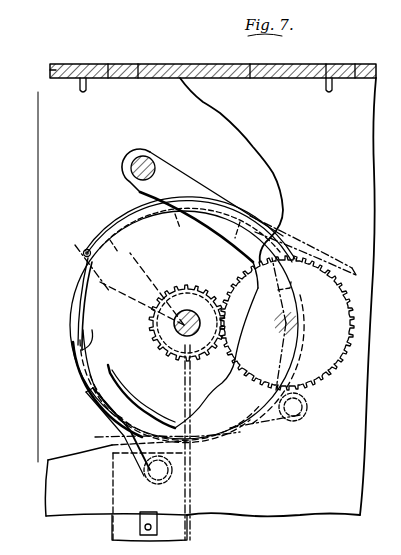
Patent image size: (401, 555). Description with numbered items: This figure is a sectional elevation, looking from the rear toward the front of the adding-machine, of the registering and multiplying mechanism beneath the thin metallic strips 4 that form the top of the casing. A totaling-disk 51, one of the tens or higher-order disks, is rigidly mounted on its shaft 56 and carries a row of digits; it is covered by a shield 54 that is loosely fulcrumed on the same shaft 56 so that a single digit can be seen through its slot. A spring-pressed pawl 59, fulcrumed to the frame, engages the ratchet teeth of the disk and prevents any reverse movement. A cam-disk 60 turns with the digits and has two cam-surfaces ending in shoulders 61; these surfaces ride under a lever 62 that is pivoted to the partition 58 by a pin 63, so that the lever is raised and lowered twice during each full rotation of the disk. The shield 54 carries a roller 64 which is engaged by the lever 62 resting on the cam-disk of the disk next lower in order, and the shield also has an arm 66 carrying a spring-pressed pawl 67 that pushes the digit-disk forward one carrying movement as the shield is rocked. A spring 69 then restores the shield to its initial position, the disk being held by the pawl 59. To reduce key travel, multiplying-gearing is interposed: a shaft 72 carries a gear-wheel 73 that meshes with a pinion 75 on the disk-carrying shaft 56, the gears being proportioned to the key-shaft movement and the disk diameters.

The metallic strips 4 is at (118, 68).
The totaling-disk 51 is at (76, 272).
The shield 54 is at (108, 236).
The shaft 56 is at (172, 330).
The partition 58 is at (76, 348).
The spring-pressed pawl 59 is at (120, 436).
The cam-disk 60 is at (126, 398).
The shoulders 61 is at (92, 378).
The lever 62 is at (197, 182).
The pin 63 is at (131, 169).
The roller 64 is at (84, 251).
The arm 66 is at (216, 358).
The spring-pressed pawl 67 is at (275, 432).
The spring 69 is at (184, 380).
The shaft 72 is at (300, 318).
The gear-wheel 73 is at (318, 382).
The pinion 75 is at (210, 292).